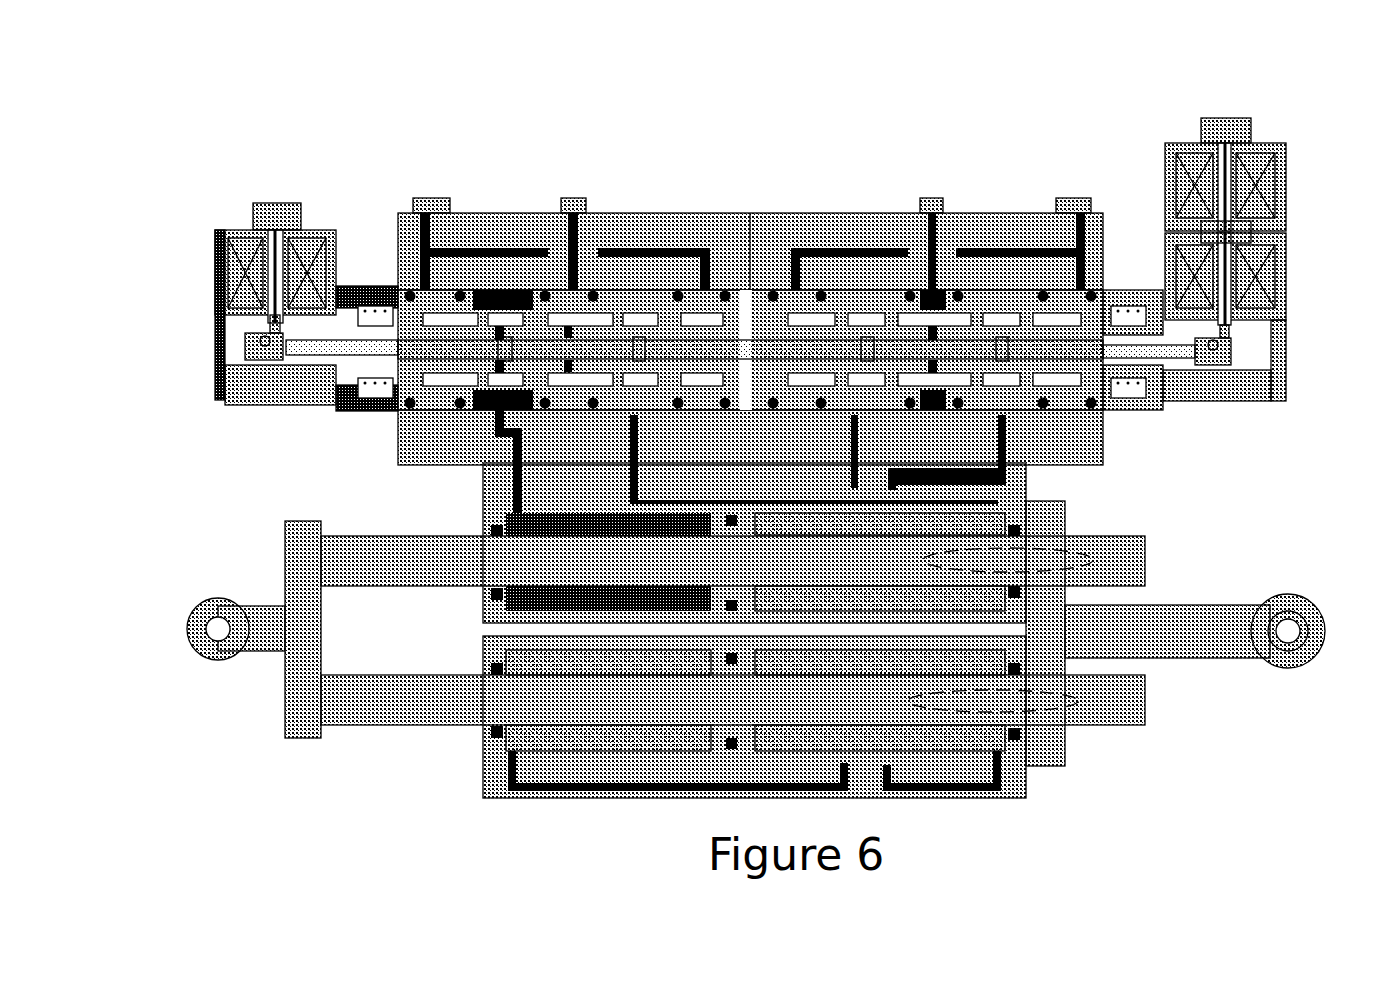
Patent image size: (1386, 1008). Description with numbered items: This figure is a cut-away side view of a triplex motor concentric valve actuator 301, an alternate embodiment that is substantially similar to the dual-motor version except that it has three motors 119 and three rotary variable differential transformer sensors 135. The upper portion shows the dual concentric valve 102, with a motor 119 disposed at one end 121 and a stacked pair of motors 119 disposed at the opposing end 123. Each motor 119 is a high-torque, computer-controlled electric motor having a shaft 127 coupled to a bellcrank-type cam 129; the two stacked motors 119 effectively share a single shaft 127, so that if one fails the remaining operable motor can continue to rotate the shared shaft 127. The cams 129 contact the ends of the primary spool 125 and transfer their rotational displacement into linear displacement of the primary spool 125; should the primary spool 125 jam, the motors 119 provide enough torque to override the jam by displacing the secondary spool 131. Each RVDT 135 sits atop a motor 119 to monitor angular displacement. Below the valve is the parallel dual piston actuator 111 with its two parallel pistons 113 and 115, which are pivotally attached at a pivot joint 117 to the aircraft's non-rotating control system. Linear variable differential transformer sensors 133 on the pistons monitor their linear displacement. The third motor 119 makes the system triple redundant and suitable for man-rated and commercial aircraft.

The triplex motor concentric valve actuator 301 is at (739, 468).
The dual concentric valve 102 is at (505, 200).
The parallel dual piston actuator 111 is at (600, 800).
The piston 113 is at (400, 700).
The piston 115 is at (400, 555).
The pivot joint 117 is at (275, 662).
The motor 119 is at (203, 255).
The end 121 is at (385, 428).
The opposing end 123 is at (1105, 430).
The primary spool 125 is at (755, 340).
The shaft 127 is at (262, 285).
The bellcrank-type cam 129 is at (237, 343).
The secondary spool 131 is at (605, 320).
The linear variable differential transformer sensor 133 is at (1085, 550).
The rotary variable differential transformer sensor 135 is at (270, 197).